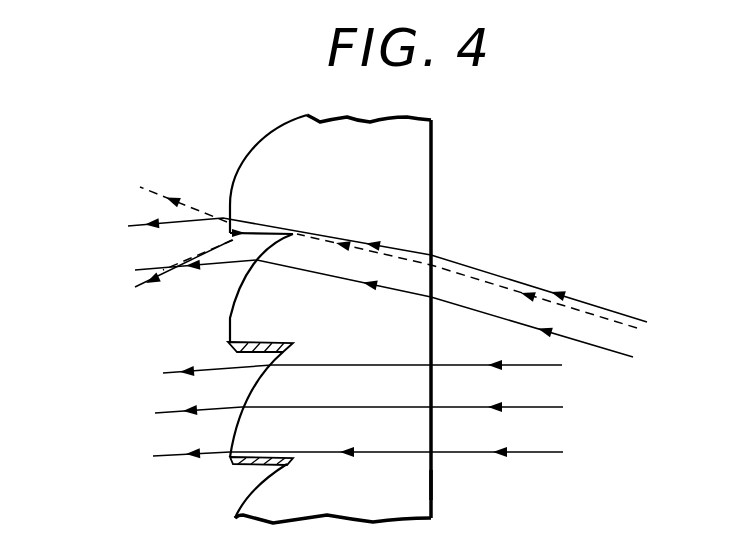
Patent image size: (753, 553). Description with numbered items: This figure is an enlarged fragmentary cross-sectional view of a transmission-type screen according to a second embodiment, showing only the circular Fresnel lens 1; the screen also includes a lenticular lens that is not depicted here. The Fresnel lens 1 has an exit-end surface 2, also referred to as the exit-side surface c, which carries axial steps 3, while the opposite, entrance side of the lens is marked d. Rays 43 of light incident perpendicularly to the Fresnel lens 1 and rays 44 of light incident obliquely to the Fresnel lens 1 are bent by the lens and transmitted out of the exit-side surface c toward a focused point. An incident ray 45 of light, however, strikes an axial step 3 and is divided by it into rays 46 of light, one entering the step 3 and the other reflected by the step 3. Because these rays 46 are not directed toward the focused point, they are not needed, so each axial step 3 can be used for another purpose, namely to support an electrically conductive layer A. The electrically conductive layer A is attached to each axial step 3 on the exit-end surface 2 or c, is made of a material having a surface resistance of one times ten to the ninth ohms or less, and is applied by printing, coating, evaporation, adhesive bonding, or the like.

The circular Fresnel lens 1 is at (443, 146).
The exit-end surface 2 is at (257, 148).
The axial step 3 is at (235, 353).
The rays of light incident perpendicularly 43 is at (555, 450).
The rays of light incident obliquely 44 is at (577, 340).
The incident ray of light 45 is at (505, 283).
The rays of light 46 is at (163, 270).
The electrically conductive layer A is at (250, 353).
The exit-side surface c is at (240, 482).
The surface d is at (432, 483).